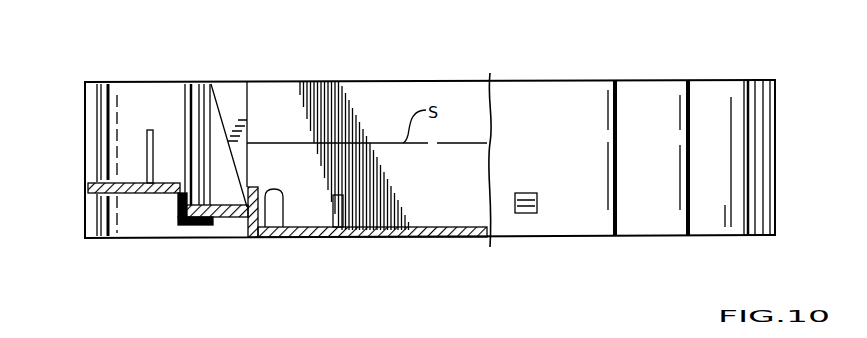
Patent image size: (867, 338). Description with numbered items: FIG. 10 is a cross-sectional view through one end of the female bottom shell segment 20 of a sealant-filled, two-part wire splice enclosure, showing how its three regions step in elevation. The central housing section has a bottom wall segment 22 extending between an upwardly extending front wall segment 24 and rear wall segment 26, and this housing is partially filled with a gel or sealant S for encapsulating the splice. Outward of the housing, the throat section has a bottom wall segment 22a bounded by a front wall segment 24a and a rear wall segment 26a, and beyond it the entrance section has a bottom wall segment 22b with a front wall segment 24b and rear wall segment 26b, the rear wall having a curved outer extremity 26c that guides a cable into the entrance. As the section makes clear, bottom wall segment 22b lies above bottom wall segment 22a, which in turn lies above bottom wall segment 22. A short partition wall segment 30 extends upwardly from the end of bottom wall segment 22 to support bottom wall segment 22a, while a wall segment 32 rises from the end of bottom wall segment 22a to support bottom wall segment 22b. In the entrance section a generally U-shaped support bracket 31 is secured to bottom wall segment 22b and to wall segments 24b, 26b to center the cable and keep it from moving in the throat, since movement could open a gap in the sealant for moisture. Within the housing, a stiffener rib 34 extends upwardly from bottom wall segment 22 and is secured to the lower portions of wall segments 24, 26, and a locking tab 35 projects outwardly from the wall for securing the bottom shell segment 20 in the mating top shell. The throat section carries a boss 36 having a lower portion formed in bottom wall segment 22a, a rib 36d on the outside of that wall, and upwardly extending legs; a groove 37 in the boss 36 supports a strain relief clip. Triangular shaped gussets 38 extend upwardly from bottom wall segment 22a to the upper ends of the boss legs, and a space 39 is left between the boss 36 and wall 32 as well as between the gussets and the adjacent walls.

The female bottom shell segment 20 is at (589, 242).
The bottom wall segment 22 is at (435, 237).
The bottom wall segment of throat section 22a is at (250, 237).
The bottom wall segment of entrance section 22b is at (103, 218).
The front wall segment 24 is at (562, 100).
The front wall segment of throat section 24a is at (657, 98).
The front wall segment of entrance section 24b is at (715, 98).
The rear wall segment 26 is at (453, 92).
The rear wall segment of throat section 26a is at (233, 97).
The rear wall segment of entrance section 26b is at (133, 100).
The curved outer extremity 26c is at (113, 118).
The partition wall segment 30 is at (276, 191).
The U-shaped support bracket 31 is at (147, 152).
The wall segment 32 is at (177, 200).
The stiffener rib 34 is at (343, 222).
The locking tab 35 is at (537, 198).
The boss 36 is at (200, 160).
The rib 36d is at (208, 227).
The groove 37 is at (233, 122).
The triangular shaped gusset 38 is at (222, 190).
The space 39 is at (196, 228).